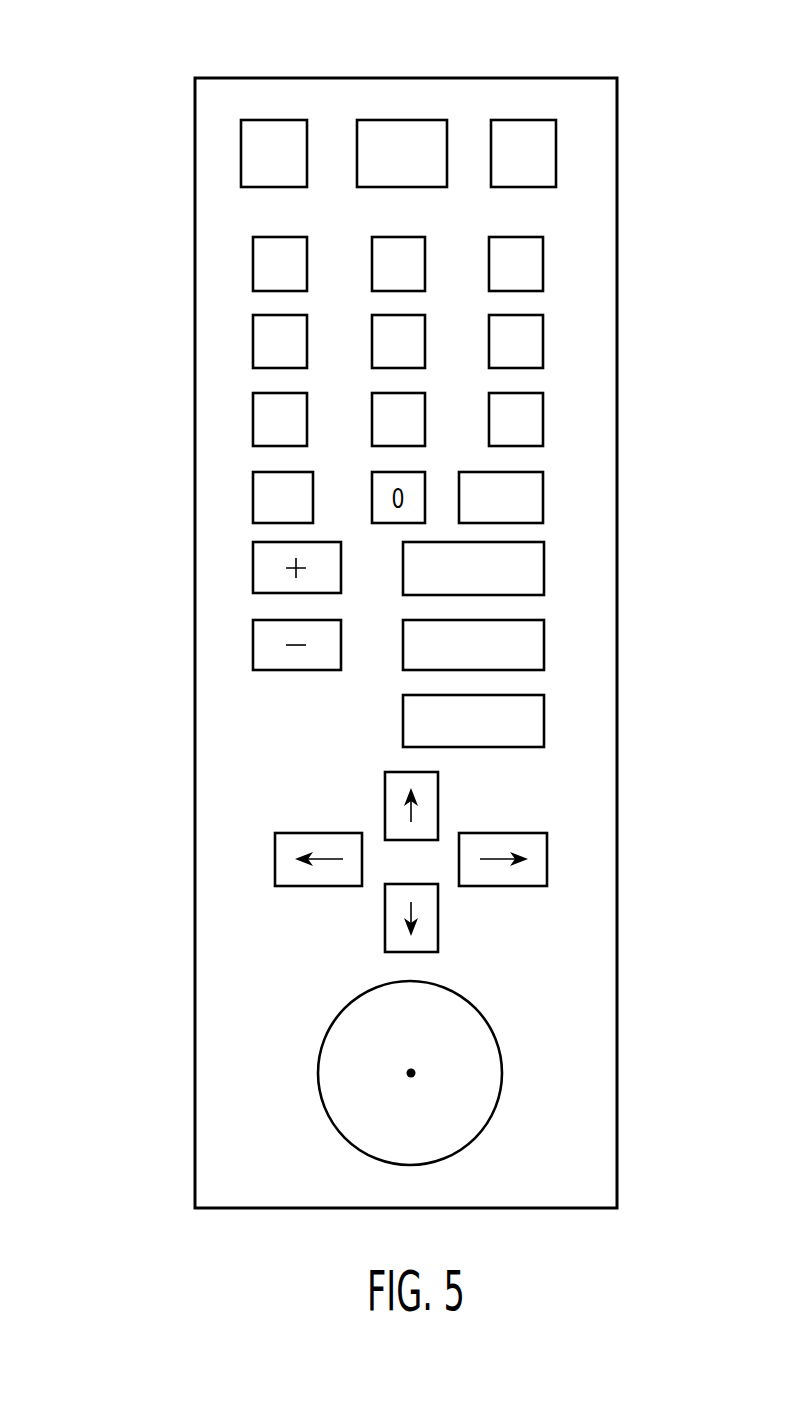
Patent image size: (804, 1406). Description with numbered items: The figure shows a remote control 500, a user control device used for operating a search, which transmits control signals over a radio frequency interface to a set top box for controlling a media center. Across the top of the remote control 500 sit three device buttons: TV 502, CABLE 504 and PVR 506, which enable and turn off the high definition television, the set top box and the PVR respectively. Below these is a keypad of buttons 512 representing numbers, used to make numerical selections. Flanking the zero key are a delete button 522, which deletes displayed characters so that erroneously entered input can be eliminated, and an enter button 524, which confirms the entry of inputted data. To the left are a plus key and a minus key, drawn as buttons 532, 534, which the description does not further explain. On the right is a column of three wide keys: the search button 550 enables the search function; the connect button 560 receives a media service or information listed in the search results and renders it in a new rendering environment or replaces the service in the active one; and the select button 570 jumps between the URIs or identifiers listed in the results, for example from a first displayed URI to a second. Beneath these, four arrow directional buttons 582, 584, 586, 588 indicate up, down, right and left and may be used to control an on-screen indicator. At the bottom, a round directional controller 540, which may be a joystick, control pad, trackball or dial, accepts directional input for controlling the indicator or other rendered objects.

The remote control 500 is at (163, 67).
The TV button 502 is at (241, 152).
The CABLE button 504 is at (395, 120).
The PVR button 506 is at (556, 155).
The buttons 512 is at (253, 265).
The delete button 522 is at (253, 497).
The enter button 524 is at (545, 496).
The plus button 532 is at (253, 565).
The minus button 534 is at (253, 637).
The search button 550 is at (546, 568).
The connect button 560 is at (546, 642).
The select button 570 is at (546, 720).
The arrow directional button 582 is at (440, 796).
The arrow directional button 584 is at (440, 927).
The arrow directional button 586 is at (548, 862).
The arrow directional button 588 is at (275, 862).
The directional controller 540 is at (502, 1062).